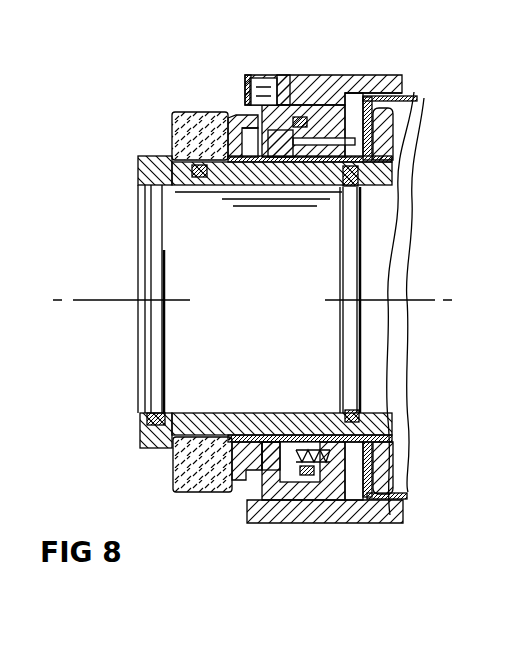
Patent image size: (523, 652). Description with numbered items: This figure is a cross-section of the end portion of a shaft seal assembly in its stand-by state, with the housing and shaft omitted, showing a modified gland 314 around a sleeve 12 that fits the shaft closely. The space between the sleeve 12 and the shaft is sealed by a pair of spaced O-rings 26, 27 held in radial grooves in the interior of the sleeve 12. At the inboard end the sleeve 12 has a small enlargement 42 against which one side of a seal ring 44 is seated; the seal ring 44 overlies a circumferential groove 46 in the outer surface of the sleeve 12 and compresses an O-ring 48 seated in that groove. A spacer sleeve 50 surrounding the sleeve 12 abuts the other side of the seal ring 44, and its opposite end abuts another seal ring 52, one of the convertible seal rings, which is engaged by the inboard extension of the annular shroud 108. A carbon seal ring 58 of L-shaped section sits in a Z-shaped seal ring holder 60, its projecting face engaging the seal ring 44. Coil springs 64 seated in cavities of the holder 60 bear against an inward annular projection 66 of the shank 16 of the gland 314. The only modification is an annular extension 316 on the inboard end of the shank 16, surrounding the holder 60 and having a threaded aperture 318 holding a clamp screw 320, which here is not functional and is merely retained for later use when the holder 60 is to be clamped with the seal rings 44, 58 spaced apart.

The annular extension 316 is at (246, 77).
The clamp screw 320 is at (263, 75).
The threaded aperture 318 is at (281, 76).
The shank of gland 16 is at (350, 75).
The modified gland 314 is at (404, 77).
The annular shroud 108 is at (378, 100).
The seal ring 52 is at (385, 142).
The sleeve 12 is at (396, 174).
The seal ring 44 is at (185, 120).
The enlargement 42 is at (155, 158).
The O-ring 48 is at (200, 177).
The circumferential groove 46 is at (207, 178).
The seal ring 58 is at (259, 160).
The seal ring holder 60 is at (274, 160).
The O-ring 26 is at (152, 410).
The spacer sleeve 50 is at (272, 432).
The coil spring 64 is at (313, 443).
The annular projection 66 is at (340, 442).
The O-ring 27 is at (352, 410).